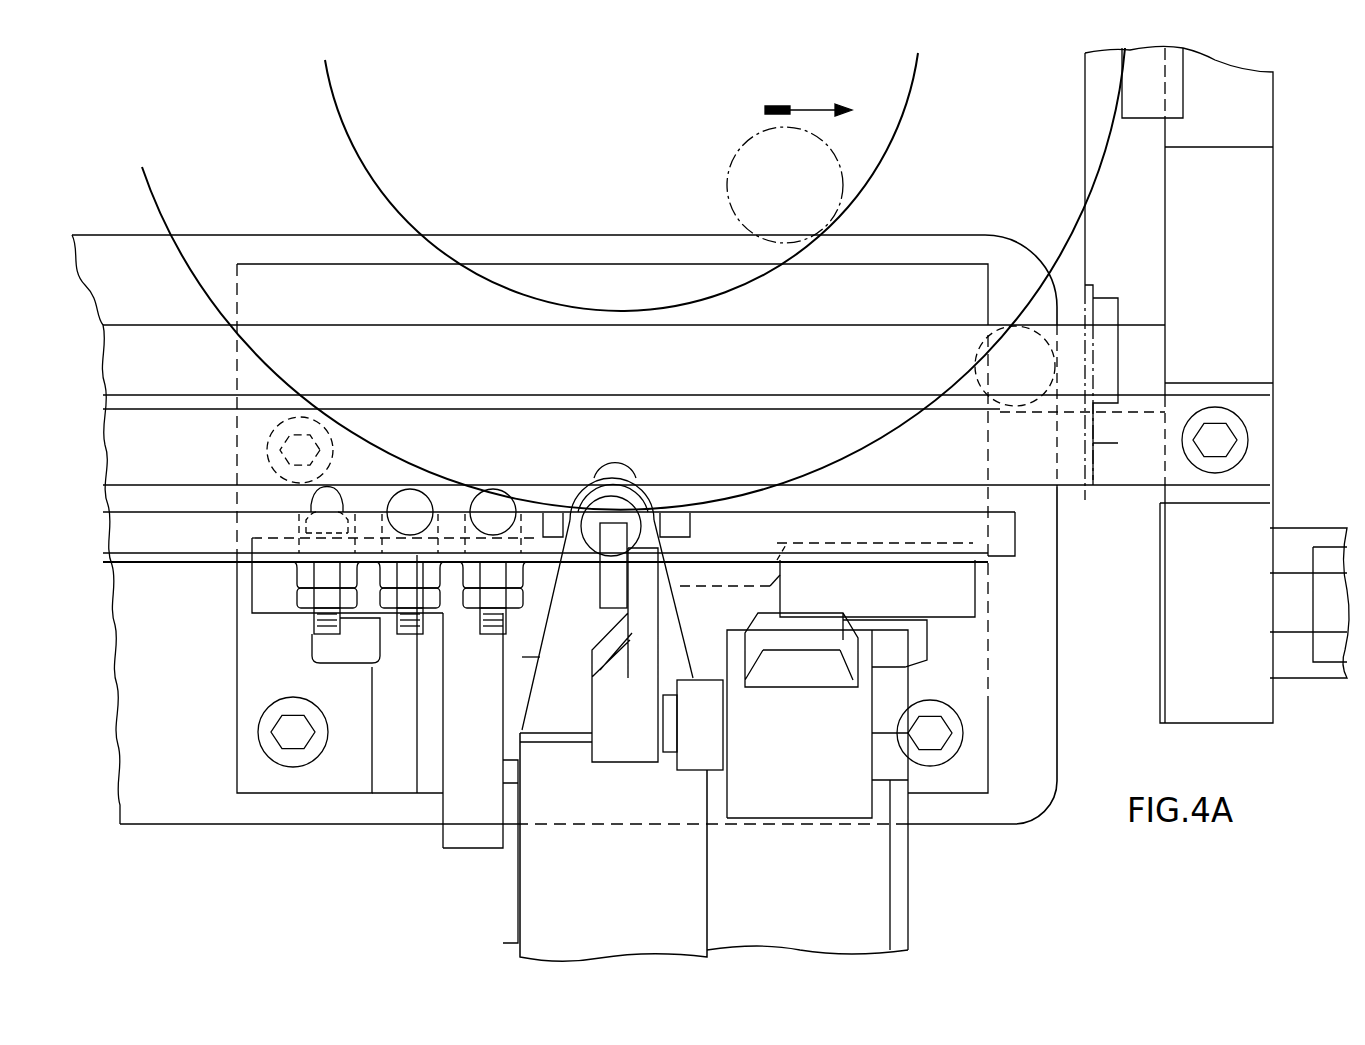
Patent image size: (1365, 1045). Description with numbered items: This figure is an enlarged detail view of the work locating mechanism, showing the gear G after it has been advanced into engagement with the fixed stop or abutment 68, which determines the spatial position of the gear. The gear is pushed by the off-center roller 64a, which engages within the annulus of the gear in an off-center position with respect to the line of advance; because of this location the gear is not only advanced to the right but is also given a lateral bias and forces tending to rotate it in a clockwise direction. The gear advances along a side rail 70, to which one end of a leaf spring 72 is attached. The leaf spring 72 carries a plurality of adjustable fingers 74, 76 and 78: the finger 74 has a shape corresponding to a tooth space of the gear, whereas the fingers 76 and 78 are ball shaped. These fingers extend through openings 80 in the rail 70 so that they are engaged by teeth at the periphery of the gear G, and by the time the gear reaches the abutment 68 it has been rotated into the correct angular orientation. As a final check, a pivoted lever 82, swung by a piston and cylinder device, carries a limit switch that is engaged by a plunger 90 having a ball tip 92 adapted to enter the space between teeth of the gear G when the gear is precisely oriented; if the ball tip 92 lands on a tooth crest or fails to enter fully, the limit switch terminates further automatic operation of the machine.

The off-center roller 64a is at (728, 176).
The fixed abutment 68 is at (1117, 92).
The gear G is at (1090, 185).
The side rail 70 is at (200, 563).
The leaf spring 72 is at (148, 563).
The adjustable finger 74 is at (340, 487).
The adjustable finger 76 is at (423, 487).
The adjustable finger 78 is at (505, 487).
The openings 80 is at (298, 520).
The lever 82 is at (537, 643).
The plunger 90 is at (633, 512).
The ball tip 92 is at (627, 468).